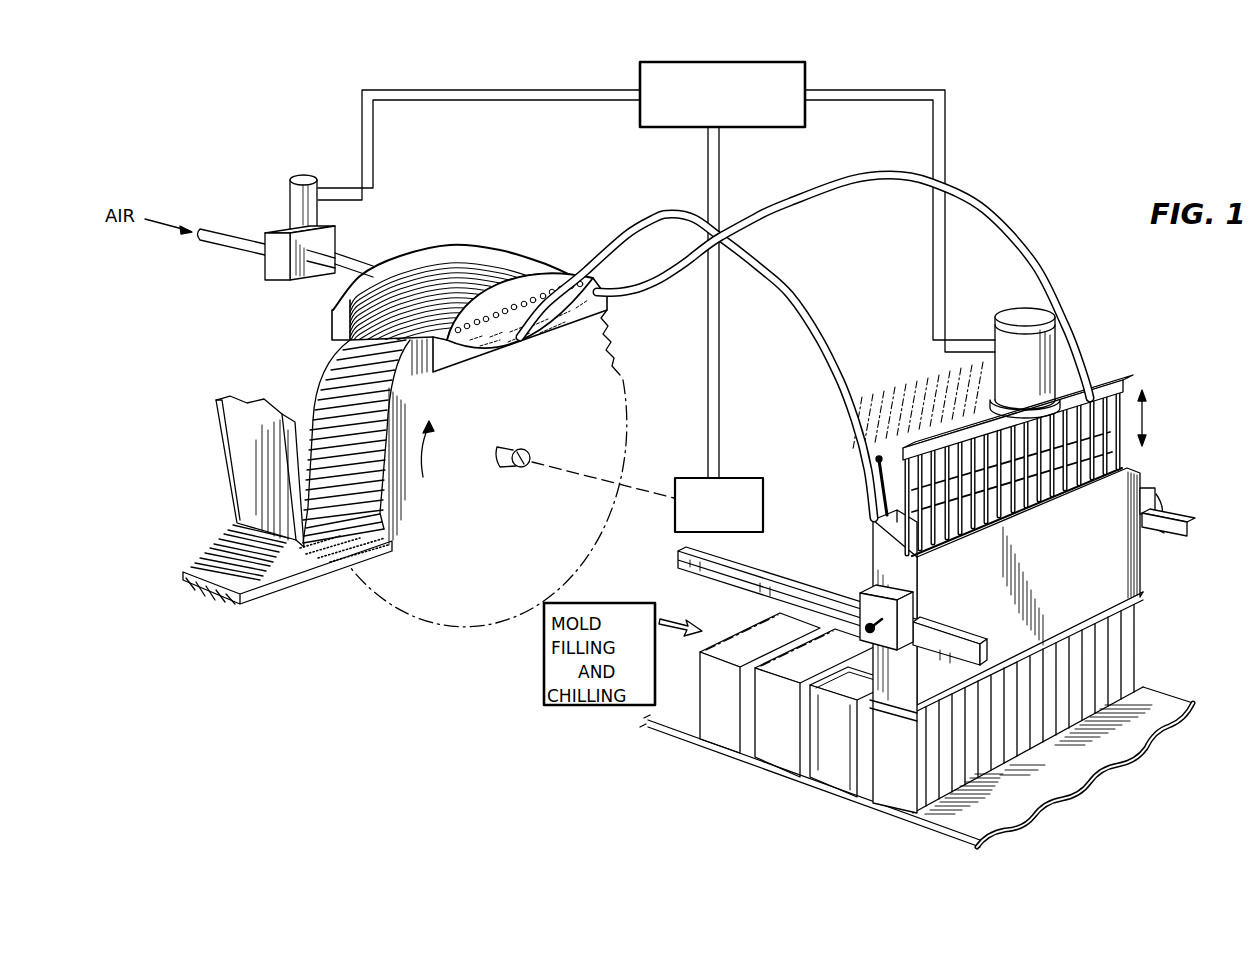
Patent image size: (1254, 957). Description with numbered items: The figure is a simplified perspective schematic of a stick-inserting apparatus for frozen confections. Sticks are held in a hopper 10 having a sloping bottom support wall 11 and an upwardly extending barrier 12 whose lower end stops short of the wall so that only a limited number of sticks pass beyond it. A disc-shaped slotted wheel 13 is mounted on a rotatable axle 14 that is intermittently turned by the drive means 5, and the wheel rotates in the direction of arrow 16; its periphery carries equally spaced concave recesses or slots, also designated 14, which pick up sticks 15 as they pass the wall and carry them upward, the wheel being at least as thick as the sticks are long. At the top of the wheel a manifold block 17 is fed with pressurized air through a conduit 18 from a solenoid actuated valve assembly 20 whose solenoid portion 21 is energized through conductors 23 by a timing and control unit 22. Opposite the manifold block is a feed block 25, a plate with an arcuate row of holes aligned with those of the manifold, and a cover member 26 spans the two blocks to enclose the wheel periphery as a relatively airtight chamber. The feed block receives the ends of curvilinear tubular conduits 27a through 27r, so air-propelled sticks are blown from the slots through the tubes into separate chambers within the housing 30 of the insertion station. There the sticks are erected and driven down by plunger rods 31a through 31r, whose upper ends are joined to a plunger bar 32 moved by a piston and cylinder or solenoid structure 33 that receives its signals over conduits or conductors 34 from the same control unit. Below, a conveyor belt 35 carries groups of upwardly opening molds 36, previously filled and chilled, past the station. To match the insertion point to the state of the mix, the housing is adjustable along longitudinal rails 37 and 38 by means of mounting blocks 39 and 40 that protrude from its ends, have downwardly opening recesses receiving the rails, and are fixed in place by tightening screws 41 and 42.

The drive means 5 is at (669, 329).
The hopper 10 is at (168, 511).
The sloping bottom support wall 11 is at (287, 577).
The upwardly extending barrier 12 is at (235, 471).
The disc-shaped member 13 is at (488, 516).
The rotatable axle 14 is at (573, 388).
The sticks 15 is at (352, 442).
The arrow 16 is at (441, 449).
The manifold block 17 is at (462, 289).
The conduit 18 is at (354, 245).
The solenoid actuated valve assembly 20 is at (284, 227).
The solenoid portion 21 is at (293, 186).
The timing and control unit 22 is at (722, 78).
The conductors 23 is at (479, 121).
The feed block 25 is at (520, 331).
The cover member 26 is at (520, 283).
The tubular conduit 27a is at (697, 366).
The tubular conduit 27r is at (843, 286).
The housing 30 is at (1038, 622).
The plunger member 31a is at (999, 514).
The plunger member 31r is at (1014, 476).
The plunger bar 32 is at (1014, 455).
The piston and cylinder or solenoid structure 33 is at (1060, 363).
The conduits or conductors 34 is at (900, 218).
The belt 35 is at (801, 781).
The molds 36 is at (1048, 721).
The rail 37 is at (832, 603).
The rail 38 is at (1191, 519).
The mounting block 39 is at (871, 601).
The mounting block 40 is at (1181, 485).
The tightening screw 41 is at (884, 649).
The tightening screw 42 is at (1189, 507).